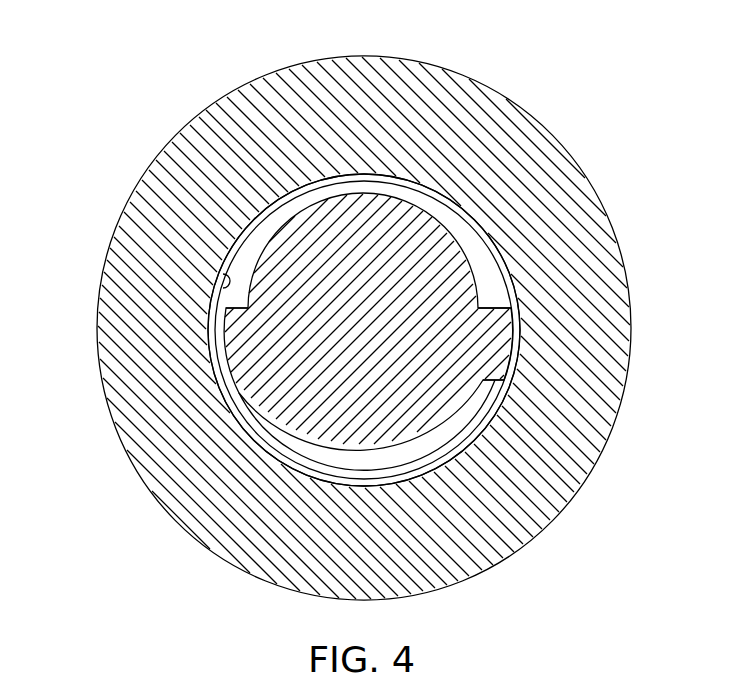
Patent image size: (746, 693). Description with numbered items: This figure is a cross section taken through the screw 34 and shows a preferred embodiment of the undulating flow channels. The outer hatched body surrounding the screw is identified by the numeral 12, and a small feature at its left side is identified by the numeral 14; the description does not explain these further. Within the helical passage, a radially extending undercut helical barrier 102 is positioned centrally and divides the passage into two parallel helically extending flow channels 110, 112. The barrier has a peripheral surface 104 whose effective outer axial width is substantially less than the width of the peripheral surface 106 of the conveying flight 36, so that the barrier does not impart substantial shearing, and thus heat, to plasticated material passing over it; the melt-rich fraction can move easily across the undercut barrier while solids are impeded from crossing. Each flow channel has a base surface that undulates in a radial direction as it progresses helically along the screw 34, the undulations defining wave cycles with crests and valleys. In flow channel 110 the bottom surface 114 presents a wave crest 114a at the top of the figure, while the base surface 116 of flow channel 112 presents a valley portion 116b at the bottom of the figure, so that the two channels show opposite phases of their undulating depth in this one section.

The housing 12 is at (158, 158).
The locating tab 14 is at (221, 286).
The screw 34 is at (337, 220).
The conveying flight 36 is at (511, 356).
The helical barrier 102 is at (227, 326).
The peripheral surface 104 is at (323, 482).
The peripheral surface 106 is at (327, 476).
The flow channel 110 is at (487, 262).
The flow channel 112 is at (305, 460).
The base surface 114 is at (435, 222).
The wave crest 114a is at (376, 196).
The base surface 116 is at (285, 440).
The valley portion 116b is at (363, 446).